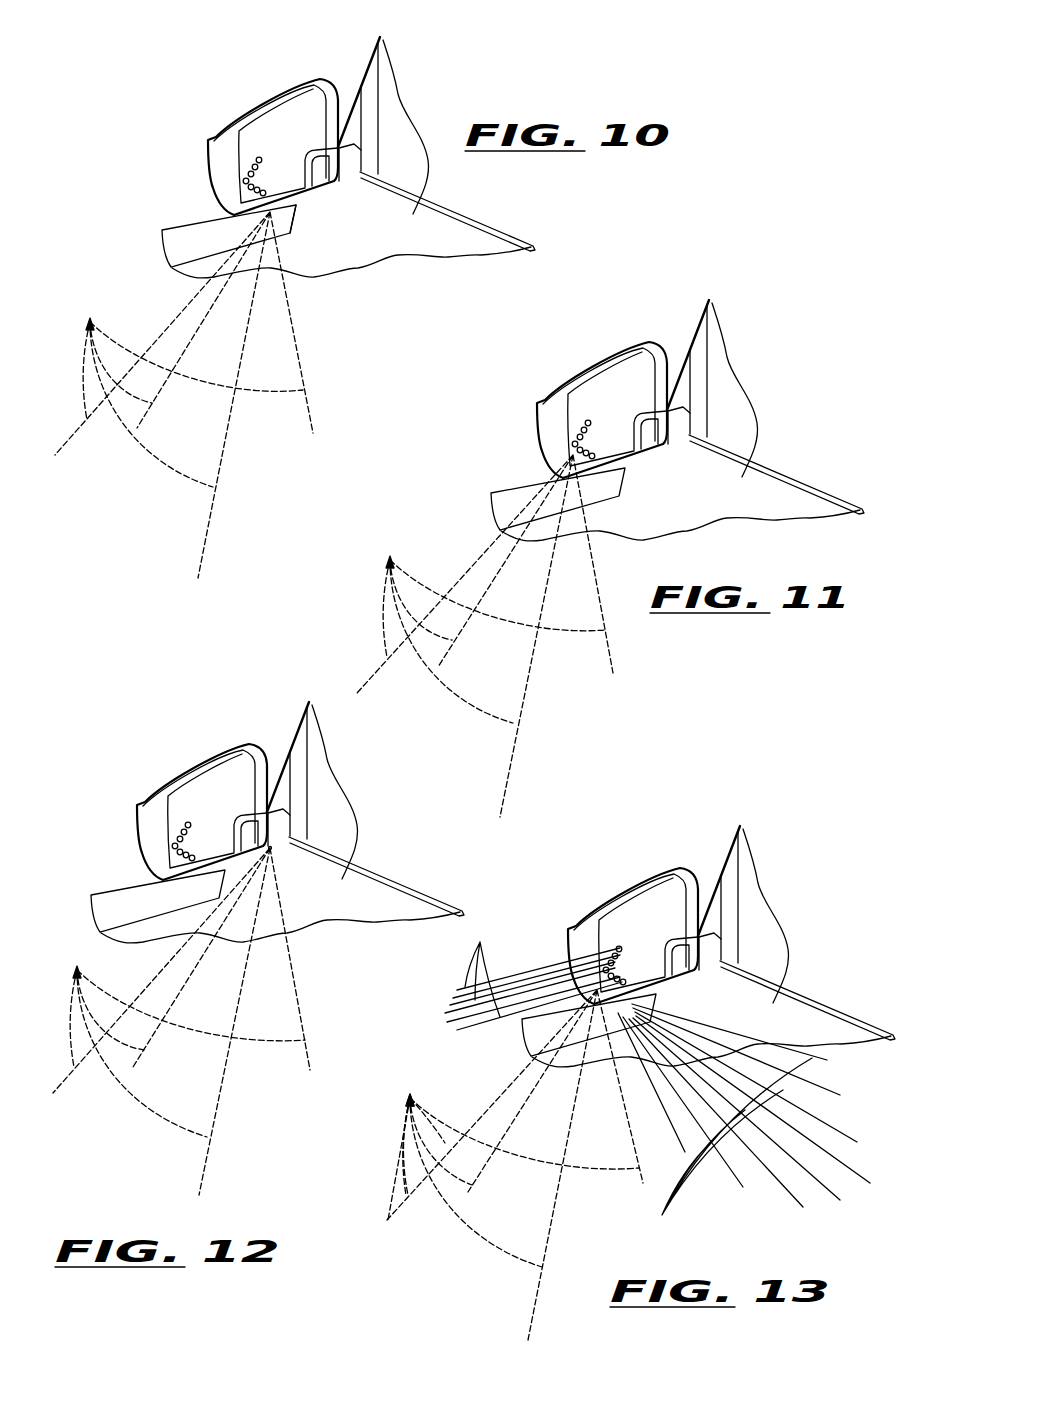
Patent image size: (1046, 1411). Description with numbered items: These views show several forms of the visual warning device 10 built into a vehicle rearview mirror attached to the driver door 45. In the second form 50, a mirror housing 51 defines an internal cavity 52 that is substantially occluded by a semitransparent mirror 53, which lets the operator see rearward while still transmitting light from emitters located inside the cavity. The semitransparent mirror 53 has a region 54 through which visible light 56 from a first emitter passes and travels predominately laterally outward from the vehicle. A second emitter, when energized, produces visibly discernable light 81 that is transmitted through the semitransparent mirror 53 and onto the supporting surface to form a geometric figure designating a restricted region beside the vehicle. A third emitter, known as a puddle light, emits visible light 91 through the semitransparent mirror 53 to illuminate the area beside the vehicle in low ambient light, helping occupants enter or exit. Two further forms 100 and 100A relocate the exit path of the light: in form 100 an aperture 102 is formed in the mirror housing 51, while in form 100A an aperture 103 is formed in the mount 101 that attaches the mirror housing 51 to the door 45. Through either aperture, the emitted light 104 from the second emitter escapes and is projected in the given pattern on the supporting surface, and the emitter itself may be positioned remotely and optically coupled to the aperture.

In FIG. 10, the visual warning device 10 is at (141, 101).
In FIG. 11, the visual warning device 10 is at (584, 356).
In FIG. 12, the visual warning device 10 is at (184, 758).
In FIG. 13, the visual warning device 10 is at (634, 876).
In FIG. 10, the driver door 45 is at (385, 237).
In FIG. 11, the driver door 45 is at (677, 420).
In FIG. 12, the driver door 45 is at (277, 822).
In FIG. 13, the driver door 45 is at (708, 946).
In FIG. 10, the second form of the visual warning device 50 is at (297, 80).
In FIG. 11, the second form of the visual warning device 50 is at (562, 378).
In FIG. 12, the second form of the visual warning device 50 is at (162, 779).
In FIG. 13, the second form of the visual warning device 50 is at (603, 900).
In FIG. 10, the mirror housing 51 is at (236, 125).
In FIG. 11, the mirror housing 51 is at (592, 407).
In FIG. 12, the mirror housing 51 is at (192, 808).
In FIG. 13, the mirror housing 51 is at (633, 922).
In FIG. 10, the internal cavity 52 is at (273, 131).
In FIG. 11, the internal cavity 52 is at (550, 386).
In FIG. 12, the internal cavity 52 is at (150, 786).
In FIG. 13, the internal cavity 52 is at (591, 901).
In FIG. 10, the semitransparent mirror 53 is at (250, 150).
In FIG. 11, the semitransparent mirror 53 is at (552, 409).
In FIG. 12, the semitransparent mirror 53 is at (152, 811).
In FIG. 13, the semitransparent mirror 53 is at (598, 919).
In FIG. 10, the region 54 is at (243, 188).
In FIG. 11, the region 54 is at (526, 440).
In FIG. 12, the region 54 is at (126, 842).
In FIG. 13, the region 54 is at (567, 939).
In FIG. 13, the visible light 56 is at (533, 970).
In FIG. 11, the visibly discernable light 81 is at (485, 636).
In FIG. 12, the visibly discernable light 81 is at (416, 1143).
In FIG. 13, the visibly discernable light 81 is at (515, 1165).
In FIG. 13, the visible light 91 is at (744, 1122).
In FIG. 10, the form of the invention 100 is at (120, 205).
In FIG. 12, the form of the invention 100A is at (124, 700).
In FIG. 10, the mount 101 is at (352, 172).
In FIG. 11, the mount 101 is at (772, 473).
In FIG. 12, the mount 101 is at (372, 832).
In FIG. 13, the mount 101 is at (803, 955).
In FIG. 10, the aperture 102 is at (296, 205).
In FIG. 12, the aperture 103 is at (270, 850).
In FIG. 10, the emitted light 104 is at (184, 395).
In FIG. 12, the emitted light 104 is at (181, 1021).